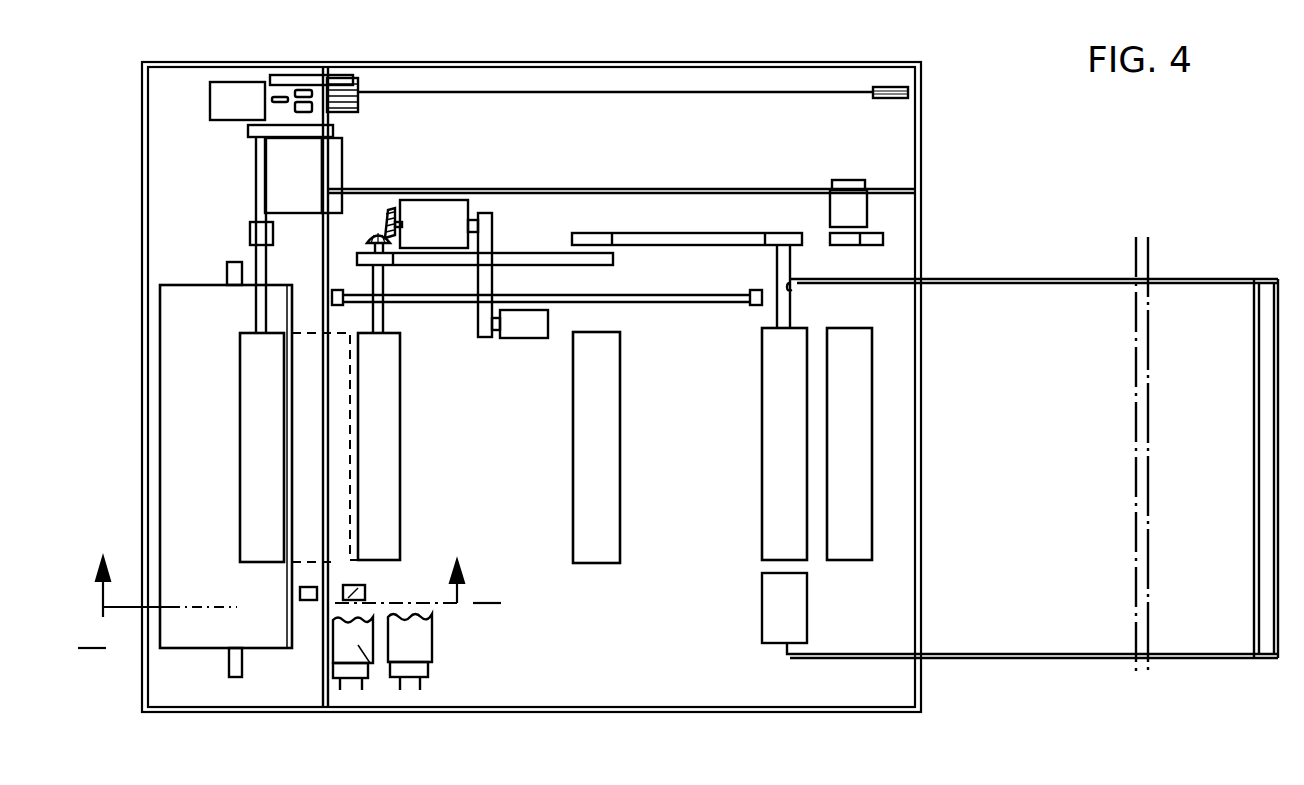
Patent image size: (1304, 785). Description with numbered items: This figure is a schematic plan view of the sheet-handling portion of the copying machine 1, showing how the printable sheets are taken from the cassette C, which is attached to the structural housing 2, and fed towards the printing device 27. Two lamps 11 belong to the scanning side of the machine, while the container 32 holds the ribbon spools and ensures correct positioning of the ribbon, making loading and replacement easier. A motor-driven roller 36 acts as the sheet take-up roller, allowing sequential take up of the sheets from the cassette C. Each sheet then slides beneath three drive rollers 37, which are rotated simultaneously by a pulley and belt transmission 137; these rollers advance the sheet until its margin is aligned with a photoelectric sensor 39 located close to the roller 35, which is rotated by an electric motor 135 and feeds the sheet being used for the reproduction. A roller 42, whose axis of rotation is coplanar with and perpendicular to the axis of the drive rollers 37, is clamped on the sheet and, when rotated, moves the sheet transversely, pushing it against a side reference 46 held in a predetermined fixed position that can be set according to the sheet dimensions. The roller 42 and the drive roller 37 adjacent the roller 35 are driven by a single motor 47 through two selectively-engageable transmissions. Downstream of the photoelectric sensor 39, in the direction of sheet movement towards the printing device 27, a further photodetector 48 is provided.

The copying machine 1 is at (978, 192).
The structural housing 2 is at (920, 630).
The lamps 11 is at (392, 648).
The printing device 27 is at (162, 717).
The container 32 is at (202, 618).
The roller 35 is at (267, 448).
The motor-driven roller 36 is at (843, 443).
The drive rollers 37 is at (373, 525).
The photoelectric sensor 39 is at (343, 597).
The roller 42 is at (525, 323).
The side reference 46 is at (572, 300).
The motor 47 is at (427, 232).
The photodetector 48 is at (300, 593).
The electric motor 135 is at (336, 168).
The pulley and belt transmission 137 is at (720, 242).
The cassette C is at (1003, 279).